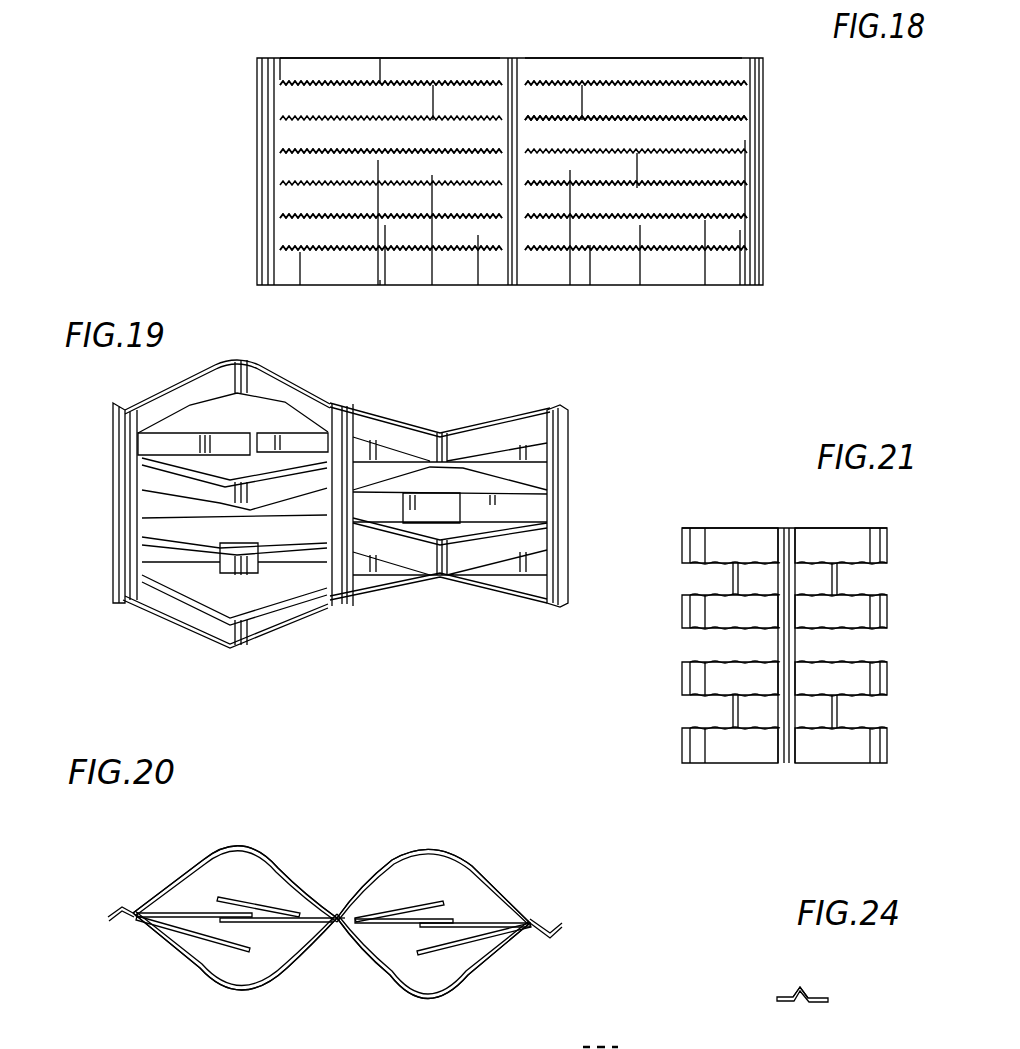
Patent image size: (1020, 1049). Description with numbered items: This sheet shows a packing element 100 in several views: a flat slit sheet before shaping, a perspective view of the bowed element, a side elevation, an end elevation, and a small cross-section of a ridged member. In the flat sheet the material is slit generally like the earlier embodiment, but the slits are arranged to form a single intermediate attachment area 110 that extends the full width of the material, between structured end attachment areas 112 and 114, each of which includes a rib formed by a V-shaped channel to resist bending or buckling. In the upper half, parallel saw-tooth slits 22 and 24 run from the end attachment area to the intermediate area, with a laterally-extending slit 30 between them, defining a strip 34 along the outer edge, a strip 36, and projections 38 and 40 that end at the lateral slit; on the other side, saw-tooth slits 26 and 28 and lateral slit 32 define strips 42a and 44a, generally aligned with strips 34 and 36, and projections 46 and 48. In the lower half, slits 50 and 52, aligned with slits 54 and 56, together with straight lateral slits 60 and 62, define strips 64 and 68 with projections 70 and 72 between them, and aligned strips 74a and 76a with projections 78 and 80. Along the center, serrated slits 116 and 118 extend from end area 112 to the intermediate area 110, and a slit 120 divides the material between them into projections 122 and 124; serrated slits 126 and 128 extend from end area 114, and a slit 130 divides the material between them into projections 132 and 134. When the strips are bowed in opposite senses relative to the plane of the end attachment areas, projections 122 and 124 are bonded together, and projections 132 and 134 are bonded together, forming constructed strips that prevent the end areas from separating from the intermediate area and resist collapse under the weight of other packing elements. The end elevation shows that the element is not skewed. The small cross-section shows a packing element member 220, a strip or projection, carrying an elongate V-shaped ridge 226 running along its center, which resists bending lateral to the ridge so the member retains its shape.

In FIG. 18, the saw-tooth slit 22 is at (383, 85).
In FIG. 18, the saw-tooth slit 24 is at (305, 115).
In FIG. 18, the saw-tooth slit 26 is at (542, 85).
In FIG. 18, the saw-tooth slit 28 is at (632, 120).
In FIG. 18, the laterally-extending slit 30 is at (425, 95).
In FIG. 18, the laterally-extending slit 32 is at (585, 110).
In FIG. 18, the strip 34 is at (350, 65).
In FIG. 19, the strip 34 is at (256, 372).
In FIG. 21, the strip 34 is at (887, 540).
In FIG. 18, the strip 36 is at (292, 140).
In FIG. 19, the strip 36 is at (142, 462).
In FIG. 21, the strip 36 is at (690, 613).
In FIG. 18, the projection 38 is at (315, 100).
In FIG. 19, the projection 38 is at (165, 432).
In FIG. 18, the projection 40 is at (470, 98).
In FIG. 19, the projection 40 is at (270, 440).
In FIG. 18, the strip 42a is at (676, 72).
In FIG. 19, the strip 42a is at (510, 433).
In FIG. 21, the strip 42a is at (718, 533).
In FIG. 18, the strip 44a is at (740, 140).
In FIG. 19, the strip 44a is at (535, 480).
In FIG. 21, the strip 44a is at (880, 616).
In FIG. 18, the projection 46 is at (705, 108).
In FIG. 19, the projection 46 is at (535, 452).
In FIG. 21, the projection 46 is at (731, 580).
In FIG. 18, the projection 48 is at (560, 107).
In FIG. 19, the projection 48 is at (372, 445).
In FIG. 21, the projection 48 is at (838, 580).
In FIG. 18, the slit 50 is at (325, 255).
In FIG. 18, the slit 52 is at (305, 240).
In FIG. 18, the slit 54 is at (590, 250).
In FIG. 18, the slit 56 is at (705, 225).
In FIG. 18, the laterally-extending straight slit 60 is at (384, 228).
In FIG. 18, the laterally-extending straight slit 62 is at (640, 228).
In FIG. 18, the strip 64 is at (381, 280).
In FIG. 19, the strip 64 is at (175, 613).
In FIG. 20, the strip 64 is at (205, 855).
In FIG. 21, the strip 64 is at (690, 745).
In FIG. 18, the strip 68 is at (305, 226).
In FIG. 19, the strip 68 is at (145, 514).
In FIG. 20, the strip 68 is at (215, 990).
In FIG. 21, the strip 68 is at (880, 680).
In FIG. 18, the projection 70 is at (295, 253).
In FIG. 19, the projection 70 is at (140, 557).
In FIG. 20, the projection 70 is at (195, 940).
In FIG. 18, the projection 72 is at (478, 238).
In FIG. 19, the projection 72 is at (240, 565).
In FIG. 20, the projection 72 is at (265, 905).
In FIG. 18, the strip 74a is at (668, 272).
In FIG. 19, the strip 74a is at (500, 580).
In FIG. 20, the strip 74a is at (428, 998).
In FIG. 21, the strip 74a is at (880, 752).
In FIG. 18, the strip 76a is at (735, 210).
In FIG. 19, the strip 76a is at (525, 542).
In FIG. 20, the strip 76a is at (452, 852).
In FIG. 21, the strip 76a is at (690, 680).
In FIG. 18, the projection 78 is at (720, 240).
In FIG. 19, the projection 78 is at (520, 568).
In FIG. 20, the projection 78 is at (465, 952).
In FIG. 21, the projection 78 is at (828, 712).
In FIG. 18, the projection 80 is at (605, 247).
In FIG. 19, the projection 80 is at (375, 560).
In FIG. 20, the projection 80 is at (363, 937).
In FIG. 21, the projection 80 is at (731, 711).
In FIG. 18, the packing element 100 is at (824, 145).
In FIG. 19, the packing element 100 is at (308, 679).
In FIG. 20, the packing element 100 is at (324, 805).
In FIG. 21, the packing element 100 is at (600, 719).
In FIG. 18, the intermediate attachment area 110 is at (510, 245).
In FIG. 19, the intermediate attachment area 110 is at (340, 600).
In FIG. 20, the intermediate attachment area 110 is at (337, 915).
In FIG. 18, the end attachment area 112 is at (258, 68).
In FIG. 19, the end attachment area 112 is at (113, 440).
In FIG. 20, the end attachment area 112 is at (118, 903).
In FIG. 18, the end attachment area 114 is at (757, 268).
In FIG. 19, the end attachment area 114 is at (570, 425).
In FIG. 20, the end attachment area 114 is at (565, 932).
In FIG. 21, the end attachment area 114 is at (787, 527).
In FIG. 18, the serrated slit 116 is at (312, 148).
In FIG. 18, the serrated slit 118 is at (310, 205).
In FIG. 18, the slit 120 is at (375, 165).
In FIG. 18, the projection 122 is at (305, 183).
In FIG. 19, the projection 122 is at (175, 525).
In FIG. 20, the projection 122 is at (178, 912).
In FIG. 18, the projection 124 is at (432, 180).
In FIG. 19, the projection 124 is at (270, 528).
In FIG. 20, the projection 124 is at (275, 924).
In FIG. 18, the serrated slit 126 is at (740, 115).
In FIG. 18, the serrated slit 128 is at (730, 200).
In FIG. 18, the slit 130 is at (635, 160).
In FIG. 18, the projection 132 is at (730, 178).
In FIG. 19, the projection 132 is at (530, 508).
In FIG. 20, the projection 132 is at (490, 920).
In FIG. 18, the projection 134 is at (570, 176).
In FIG. 19, the projection 134 is at (445, 520).
In FIG. 20, the projection 134 is at (430, 905).
In FIG. 24, the packing element member 220 is at (830, 1000).
In FIG. 24, the ridge 226 is at (797, 990).